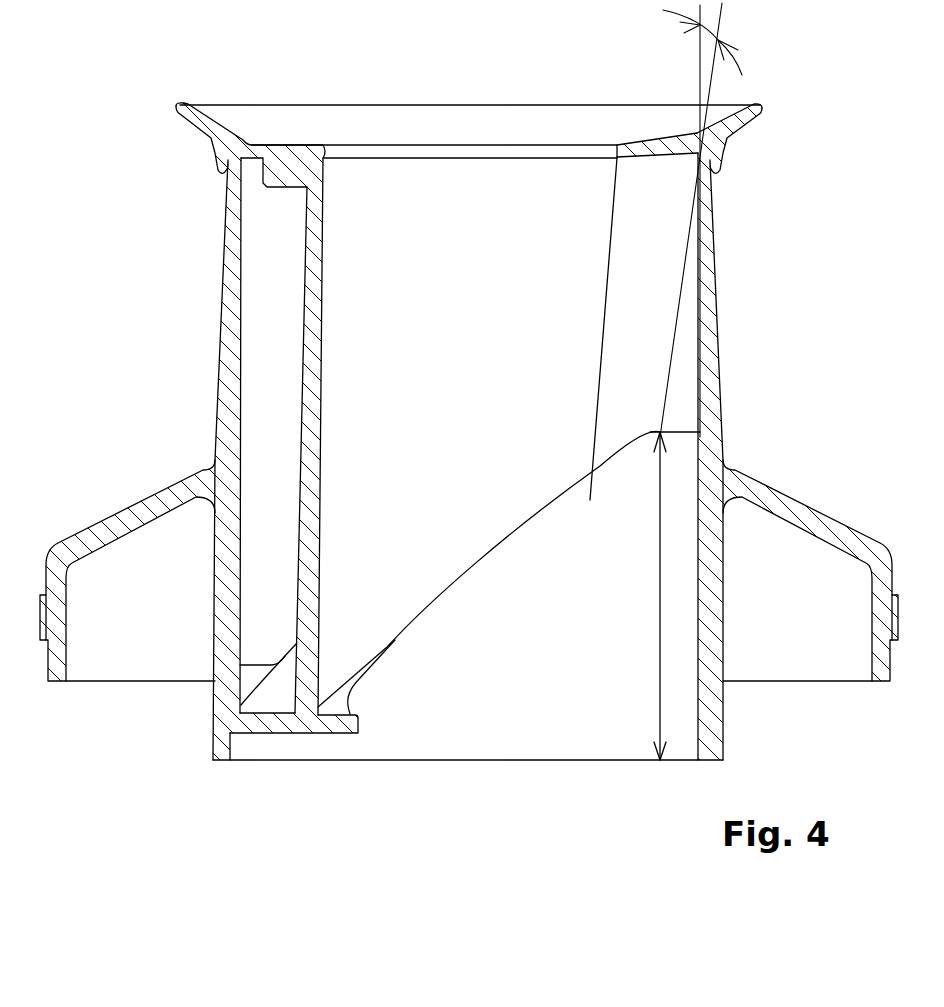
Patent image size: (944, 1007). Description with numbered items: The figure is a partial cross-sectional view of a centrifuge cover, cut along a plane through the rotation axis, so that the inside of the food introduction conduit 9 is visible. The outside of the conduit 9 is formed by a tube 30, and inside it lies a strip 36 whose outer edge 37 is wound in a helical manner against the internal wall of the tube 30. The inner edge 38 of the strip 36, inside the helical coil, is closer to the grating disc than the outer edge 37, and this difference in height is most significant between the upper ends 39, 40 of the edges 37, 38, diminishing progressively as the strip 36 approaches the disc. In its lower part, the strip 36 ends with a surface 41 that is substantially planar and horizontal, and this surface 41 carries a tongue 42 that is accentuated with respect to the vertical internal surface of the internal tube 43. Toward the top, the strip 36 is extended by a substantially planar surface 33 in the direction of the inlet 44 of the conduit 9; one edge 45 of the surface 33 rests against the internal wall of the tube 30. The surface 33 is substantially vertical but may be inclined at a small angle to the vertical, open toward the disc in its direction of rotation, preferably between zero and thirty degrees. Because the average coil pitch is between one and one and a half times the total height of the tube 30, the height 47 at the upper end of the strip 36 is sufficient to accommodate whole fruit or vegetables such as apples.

The food introduction conduit 9 is at (722, 367).
The tube 30 is at (224, 258).
The surface 33 is at (670, 223).
The strip 36 is at (262, 703).
The edge of strip 37 is at (240, 665).
The edge of strip 38 is at (472, 560).
The upper end of edge 39 is at (677, 433).
The upper end of edge 40 is at (590, 500).
The surface 41 is at (307, 736).
The tongue 42 is at (350, 731).
The internal tube 43 is at (322, 333).
The inlet of conduit 44 is at (434, 120).
The edge of surface 45 is at (677, 325).
The height 47 is at (660, 648).